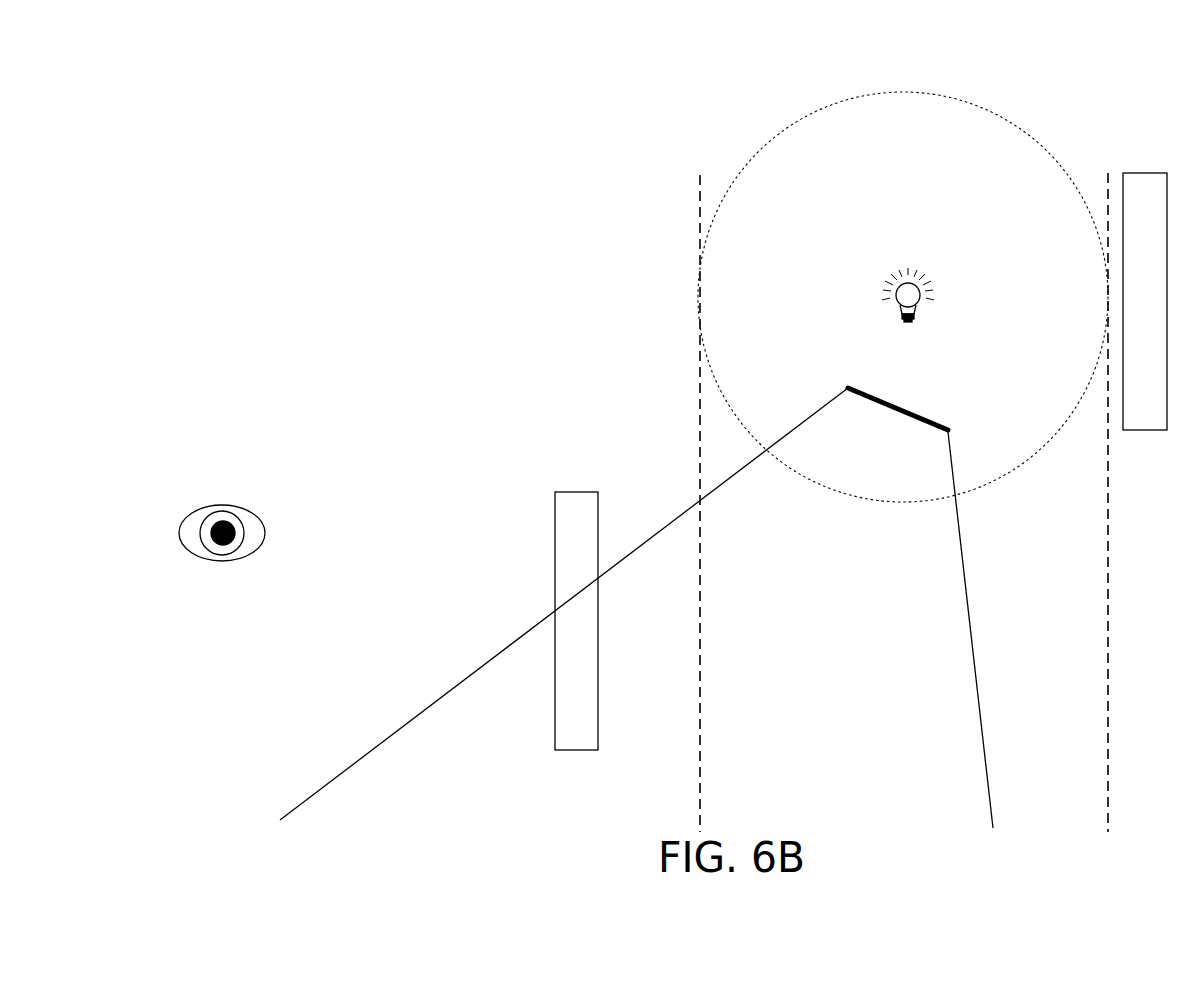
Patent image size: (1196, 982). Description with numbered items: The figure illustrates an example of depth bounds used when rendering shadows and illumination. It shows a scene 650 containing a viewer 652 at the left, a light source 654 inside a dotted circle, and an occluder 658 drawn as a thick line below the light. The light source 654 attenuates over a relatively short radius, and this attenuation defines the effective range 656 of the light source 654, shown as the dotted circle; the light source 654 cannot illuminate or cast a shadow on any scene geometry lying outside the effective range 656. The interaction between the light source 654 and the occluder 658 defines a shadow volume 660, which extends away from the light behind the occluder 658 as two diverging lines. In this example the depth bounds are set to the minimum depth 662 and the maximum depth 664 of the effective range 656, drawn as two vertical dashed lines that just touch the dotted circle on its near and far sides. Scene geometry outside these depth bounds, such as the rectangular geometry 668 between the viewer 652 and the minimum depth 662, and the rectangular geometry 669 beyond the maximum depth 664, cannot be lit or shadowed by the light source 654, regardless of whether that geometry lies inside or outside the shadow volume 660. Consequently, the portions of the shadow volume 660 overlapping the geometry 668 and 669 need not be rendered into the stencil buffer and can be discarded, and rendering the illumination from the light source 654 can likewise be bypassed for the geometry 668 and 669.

The scene 650 is at (416, 219).
The viewer 652 is at (262, 498).
The light source 654 is at (913, 247).
The effective range 656 is at (935, 87).
The occluder 658 is at (912, 382).
The shadow volume 660 is at (852, 625).
The minimum depth 662 is at (692, 190).
The maximum depth 664 is at (1103, 633).
The geometry 668 is at (578, 492).
The geometry 669 is at (1148, 432).